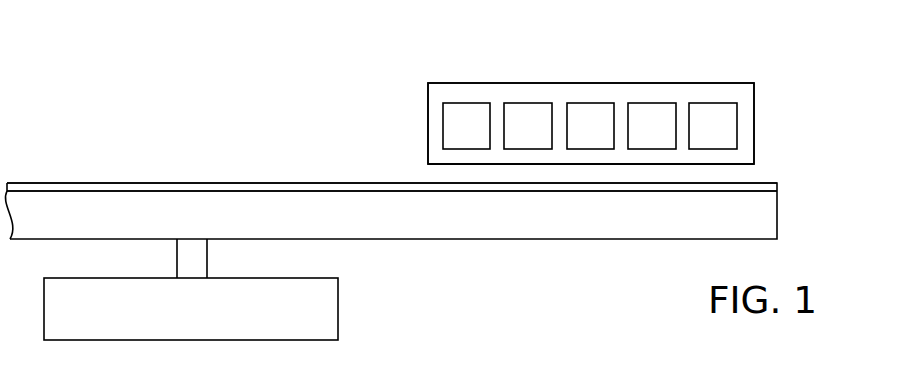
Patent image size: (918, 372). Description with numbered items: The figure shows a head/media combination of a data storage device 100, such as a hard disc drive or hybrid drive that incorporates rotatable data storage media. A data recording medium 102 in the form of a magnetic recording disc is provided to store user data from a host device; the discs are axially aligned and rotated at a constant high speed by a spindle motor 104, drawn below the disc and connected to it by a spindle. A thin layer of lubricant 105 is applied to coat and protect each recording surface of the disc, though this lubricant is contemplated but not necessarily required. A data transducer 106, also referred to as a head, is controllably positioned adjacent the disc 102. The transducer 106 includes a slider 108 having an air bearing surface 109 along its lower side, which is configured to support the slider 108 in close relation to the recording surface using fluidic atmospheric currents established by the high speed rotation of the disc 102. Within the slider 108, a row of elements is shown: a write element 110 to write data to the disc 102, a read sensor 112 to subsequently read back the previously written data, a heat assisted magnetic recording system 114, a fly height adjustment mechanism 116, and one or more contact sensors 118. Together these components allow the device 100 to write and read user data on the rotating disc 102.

The data storage device 100 is at (114, 48).
The data recording media 102 is at (253, 198).
The spindle motor 104 is at (338, 310).
The lubricant 105 is at (162, 187).
The data transducer 106 is at (400, 117).
The slider 108 is at (754, 97).
The air bearing surface 109 is at (725, 165).
The write element 110 is at (467, 103).
The read sensor 112 is at (530, 103).
The heat assisted magnetic recording system 114 is at (590, 103).
The fly height adjustment mechanism 116 is at (650, 103).
The contact sensors 118 is at (710, 103).